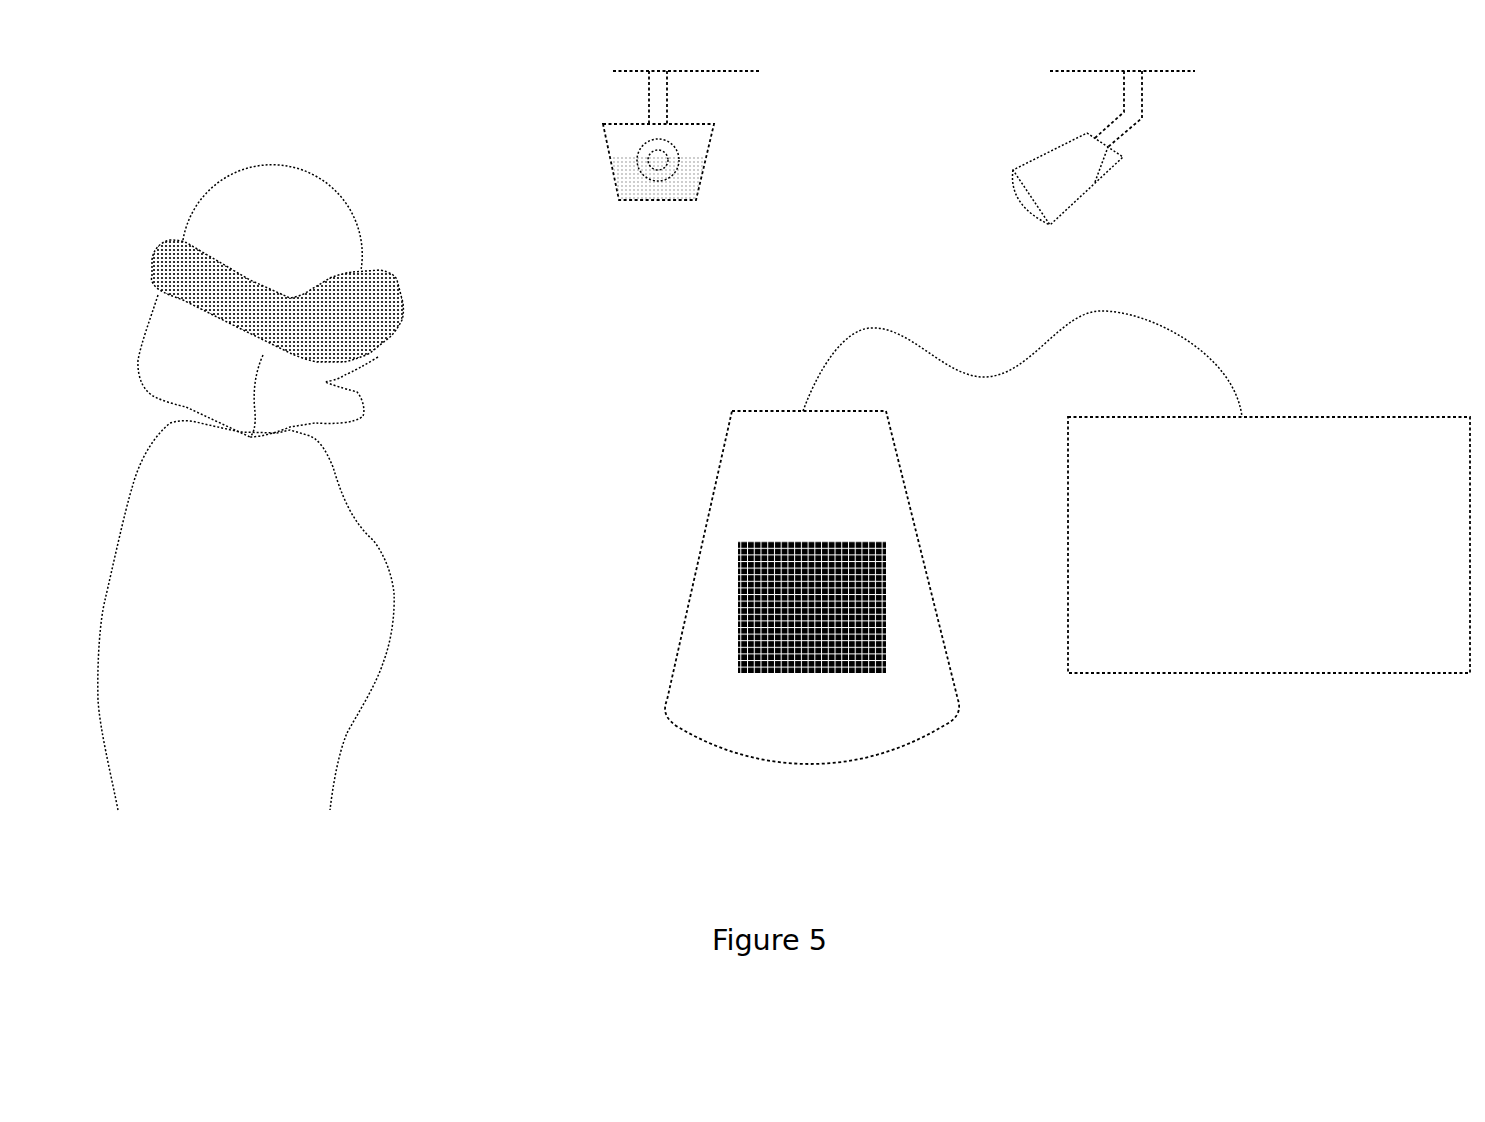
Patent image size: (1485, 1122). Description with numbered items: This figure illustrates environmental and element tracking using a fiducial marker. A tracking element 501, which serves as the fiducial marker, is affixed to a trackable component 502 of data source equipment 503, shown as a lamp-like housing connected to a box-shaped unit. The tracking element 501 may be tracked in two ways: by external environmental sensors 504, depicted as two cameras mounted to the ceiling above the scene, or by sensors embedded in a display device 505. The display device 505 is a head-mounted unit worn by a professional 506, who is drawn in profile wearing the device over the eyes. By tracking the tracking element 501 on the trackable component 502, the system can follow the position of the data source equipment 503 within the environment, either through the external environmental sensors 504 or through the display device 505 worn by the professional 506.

The tracking element 501 is at (953, 537).
The trackable component 502 is at (812, 627).
The data source equipment 503 is at (1269, 545).
The external environmental sensors 504 is at (988, 207).
The display device 505 is at (445, 318).
The professional 506 is at (246, 487).